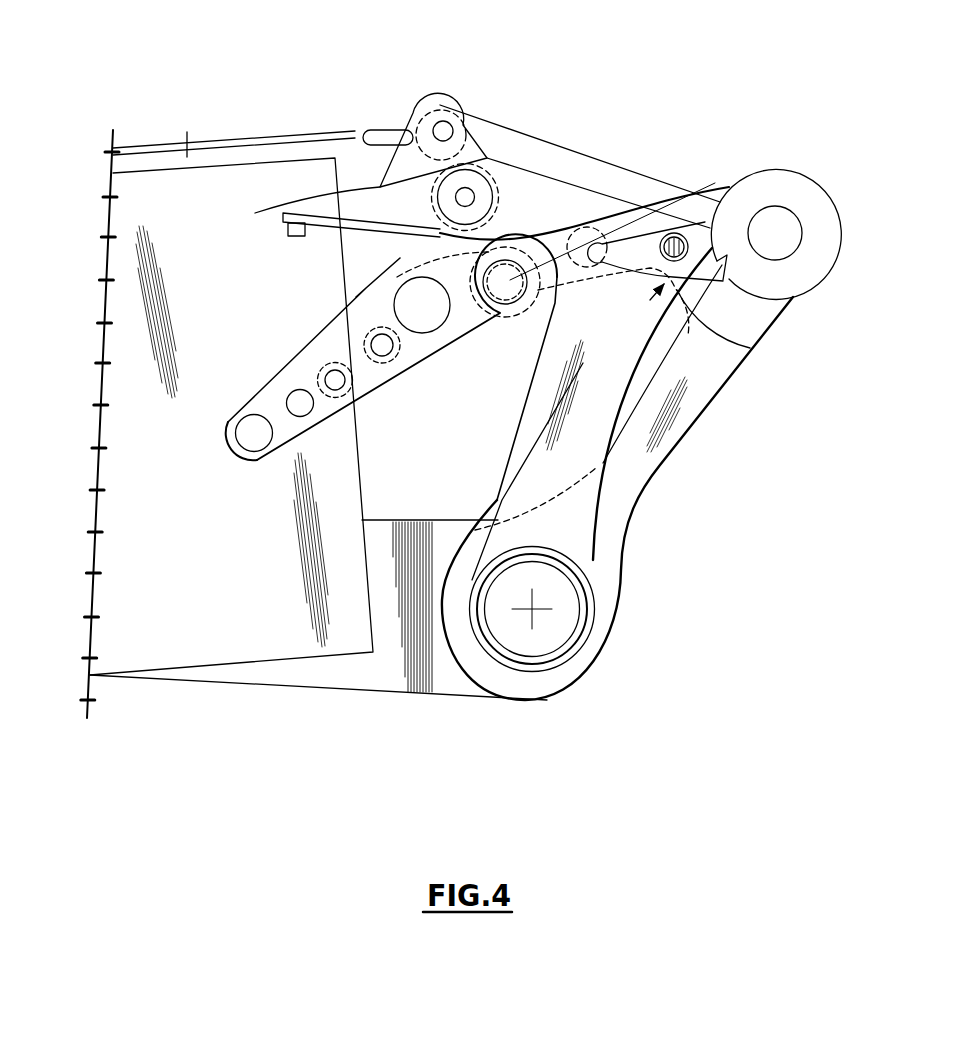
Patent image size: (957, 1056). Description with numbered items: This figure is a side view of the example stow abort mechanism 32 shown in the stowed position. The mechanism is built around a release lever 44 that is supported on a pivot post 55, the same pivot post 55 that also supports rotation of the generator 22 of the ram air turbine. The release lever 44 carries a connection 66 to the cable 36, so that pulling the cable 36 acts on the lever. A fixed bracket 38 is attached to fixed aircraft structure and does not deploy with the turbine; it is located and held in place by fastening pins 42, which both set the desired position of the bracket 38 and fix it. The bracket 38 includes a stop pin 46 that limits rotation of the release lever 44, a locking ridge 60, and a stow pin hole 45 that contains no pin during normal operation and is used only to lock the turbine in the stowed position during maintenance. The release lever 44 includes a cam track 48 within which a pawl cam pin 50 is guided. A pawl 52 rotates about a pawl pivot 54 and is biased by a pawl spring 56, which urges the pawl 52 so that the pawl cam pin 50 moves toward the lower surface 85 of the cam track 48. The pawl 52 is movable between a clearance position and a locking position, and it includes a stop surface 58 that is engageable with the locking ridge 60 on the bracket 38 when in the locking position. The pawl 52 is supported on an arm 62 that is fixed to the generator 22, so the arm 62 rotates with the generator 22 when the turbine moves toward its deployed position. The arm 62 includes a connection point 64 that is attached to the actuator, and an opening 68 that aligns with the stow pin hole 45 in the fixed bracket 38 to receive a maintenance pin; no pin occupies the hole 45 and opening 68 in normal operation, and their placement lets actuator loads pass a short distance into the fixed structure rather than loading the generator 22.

The generator 22 is at (372, 667).
The stow abort mechanism 32 is at (706, 66).
The cable 36 is at (233, 150).
The fixed bracket 38 is at (279, 397).
The fastening pins 42 is at (380, 332).
The release lever 44 is at (583, 363).
The stow pin hole 45 is at (493, 313).
The stop pin 46 is at (252, 458).
The cam track 48 is at (750, 348).
The pawl cam pin 50 is at (683, 236).
The pawl 52 is at (574, 190).
The pawl pivot 54 is at (465, 189).
The pivot post 55 is at (550, 625).
The pawl spring 56 is at (361, 218).
The stop surface 58 is at (731, 274).
The locking ridge 60 is at (361, 313).
The arm 62 is at (632, 468).
The connection point 64 is at (802, 212).
The connection 66 is at (402, 124).
The opening 68 is at (443, 337).
The lower surface 85 is at (672, 237).